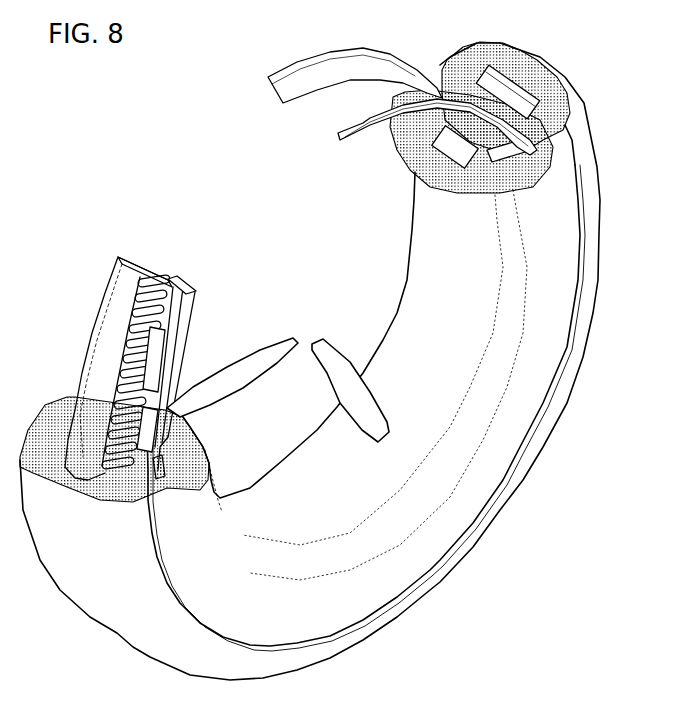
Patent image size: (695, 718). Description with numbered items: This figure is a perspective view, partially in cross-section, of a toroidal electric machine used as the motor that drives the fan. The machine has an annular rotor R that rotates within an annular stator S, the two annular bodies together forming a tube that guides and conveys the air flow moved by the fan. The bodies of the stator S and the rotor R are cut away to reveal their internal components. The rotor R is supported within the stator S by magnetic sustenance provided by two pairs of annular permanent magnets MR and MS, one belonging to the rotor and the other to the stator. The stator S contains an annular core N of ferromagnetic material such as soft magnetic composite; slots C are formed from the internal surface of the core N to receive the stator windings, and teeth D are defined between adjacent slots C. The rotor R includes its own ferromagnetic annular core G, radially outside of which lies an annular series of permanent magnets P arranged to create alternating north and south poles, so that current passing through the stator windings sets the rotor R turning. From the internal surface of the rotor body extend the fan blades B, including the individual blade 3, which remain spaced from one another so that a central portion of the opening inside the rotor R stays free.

The annular stator S is at (310, 363).
The annular rotor R is at (597, 184).
The annular permanent magnets of the rotor MR is at (397, 100).
The annular permanent magnets of the stator MS is at (106, 497).
The annular core of the rotor G is at (362, 256).
The permanent magnets of the rotor P is at (142, 430).
The annular core of the stator N is at (100, 368).
The slots C is at (143, 290).
The teeth D is at (178, 295).
The blades B is at (243, 351).
The blade 3 is at (372, 390).